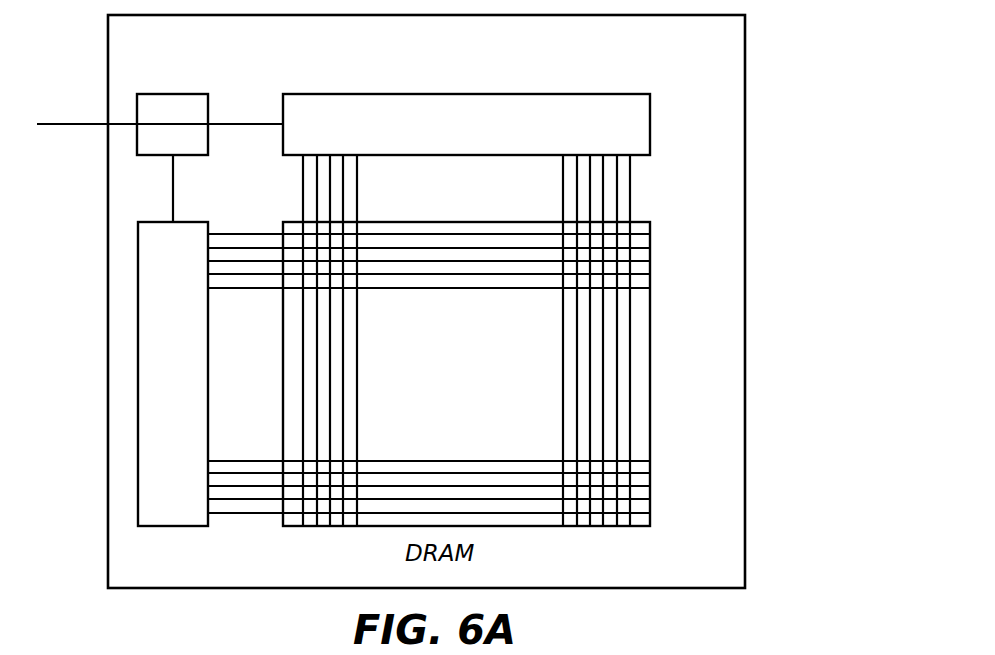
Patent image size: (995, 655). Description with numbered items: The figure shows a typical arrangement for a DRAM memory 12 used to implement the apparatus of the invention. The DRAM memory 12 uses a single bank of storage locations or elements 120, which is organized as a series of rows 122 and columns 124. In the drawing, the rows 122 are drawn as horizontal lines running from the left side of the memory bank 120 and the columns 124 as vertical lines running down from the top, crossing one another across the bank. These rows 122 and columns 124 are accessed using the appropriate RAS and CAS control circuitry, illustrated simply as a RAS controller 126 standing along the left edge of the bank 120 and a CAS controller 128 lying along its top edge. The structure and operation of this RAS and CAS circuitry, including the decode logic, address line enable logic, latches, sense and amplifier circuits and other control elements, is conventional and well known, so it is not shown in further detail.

The DRAM memory 12 is at (745, 80).
The bank of storage locations or elements 120 is at (650, 352).
The rows 122 is at (217, 290).
The columns 124 is at (357, 165).
The RAS controller 126 is at (138, 360).
The CAS controller 128 is at (505, 94).